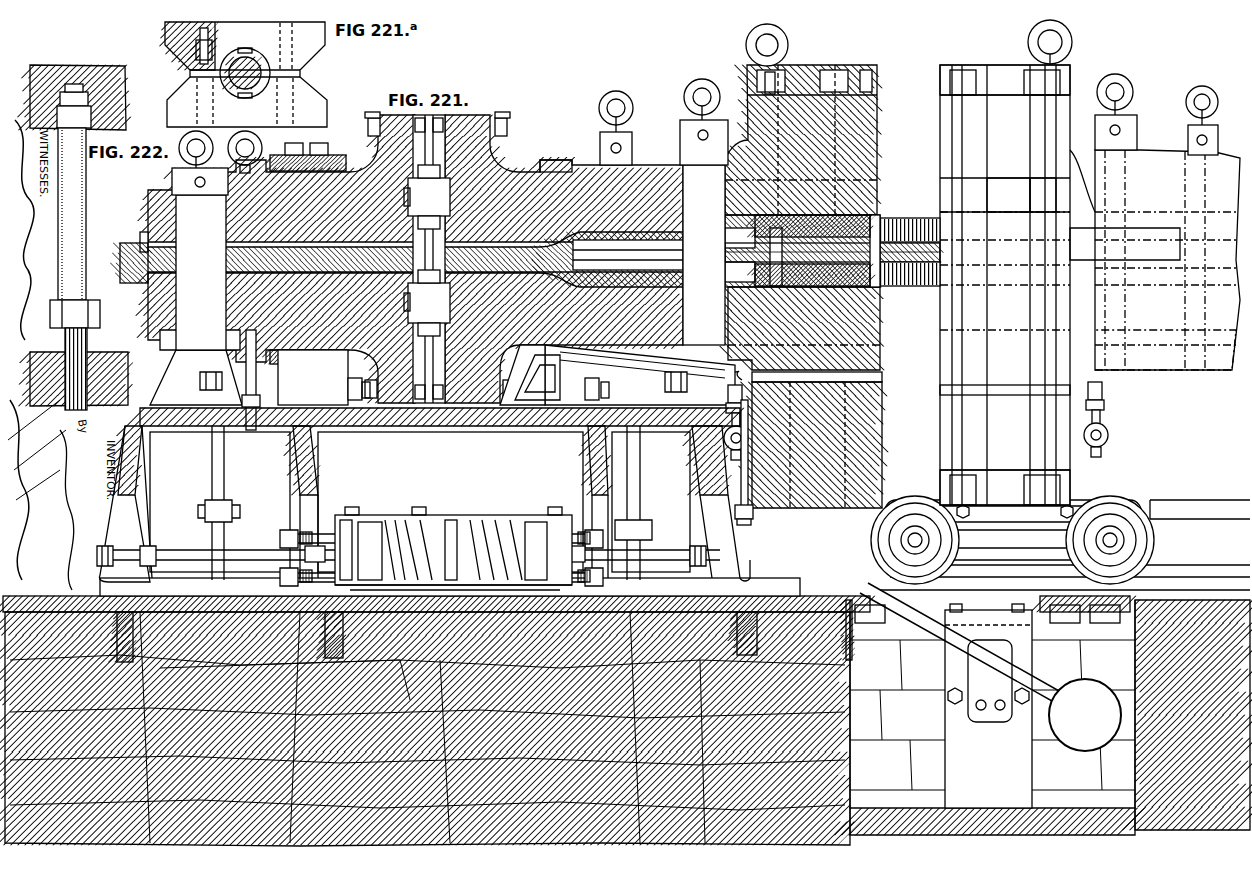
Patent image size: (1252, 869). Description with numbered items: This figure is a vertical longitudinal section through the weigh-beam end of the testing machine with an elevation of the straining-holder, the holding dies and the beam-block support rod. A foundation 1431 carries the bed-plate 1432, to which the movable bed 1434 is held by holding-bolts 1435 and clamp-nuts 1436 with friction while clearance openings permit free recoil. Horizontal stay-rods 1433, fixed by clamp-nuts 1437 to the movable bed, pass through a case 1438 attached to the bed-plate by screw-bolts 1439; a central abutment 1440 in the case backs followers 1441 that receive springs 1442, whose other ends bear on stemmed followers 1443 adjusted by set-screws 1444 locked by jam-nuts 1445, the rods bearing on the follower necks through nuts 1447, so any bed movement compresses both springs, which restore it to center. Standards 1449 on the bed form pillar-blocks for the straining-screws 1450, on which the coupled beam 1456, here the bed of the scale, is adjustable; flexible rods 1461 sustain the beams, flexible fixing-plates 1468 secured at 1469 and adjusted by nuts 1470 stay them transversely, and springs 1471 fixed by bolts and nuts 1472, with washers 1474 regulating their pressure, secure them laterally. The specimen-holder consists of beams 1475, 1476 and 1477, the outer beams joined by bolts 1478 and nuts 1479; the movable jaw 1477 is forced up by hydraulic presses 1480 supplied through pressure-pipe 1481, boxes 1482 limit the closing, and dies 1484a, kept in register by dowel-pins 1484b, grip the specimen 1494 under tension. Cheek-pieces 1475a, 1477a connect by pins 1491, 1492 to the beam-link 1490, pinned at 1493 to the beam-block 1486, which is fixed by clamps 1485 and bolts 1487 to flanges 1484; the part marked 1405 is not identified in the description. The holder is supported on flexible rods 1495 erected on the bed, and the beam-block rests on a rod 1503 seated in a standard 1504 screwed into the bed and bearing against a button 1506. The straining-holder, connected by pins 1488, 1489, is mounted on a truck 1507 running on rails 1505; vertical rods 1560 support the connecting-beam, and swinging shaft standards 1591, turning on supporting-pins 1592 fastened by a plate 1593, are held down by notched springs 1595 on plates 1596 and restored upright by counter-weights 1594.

In FIG. 221, the cap plate 1405 is at (308, 163).
In FIG. 221, the foundation 1431 is at (626, 723).
In FIG. 221, the bed-plate 1432 is at (565, 620).
In FIG. 221, the horizontal stay-rods 1433 is at (414, 552).
In FIG. 222, the movable bed 1434 is at (86, 371).
In FIG. 221, the movable bed 1434 is at (399, 456).
In FIG. 221, the holding-bolts 1435 is at (431, 495).
In FIG. 221, the clamp-nuts 1436 is at (458, 385).
In FIG. 221, the clamp-nuts 1437 is at (408, 550).
In FIG. 221, the case or bearing 1438 is at (453, 550).
In FIG. 221, the screw-bolts 1439 is at (453, 514).
In FIG. 221, the central abutment 1440 is at (453, 579).
In FIG. 221, the followers 1441 is at (414, 550).
In FIG. 221, the springs 1442 is at (450, 550).
In FIG. 221, the followers 1443 is at (455, 551).
In FIG. 221, the set-screws 1444 is at (434, 558).
In FIG. 221, the jam-nuts 1445 is at (448, 544).
In FIG. 221, the nuts 1447 is at (450, 554).
In FIG. 221, the standards or pillar-blocks 1449 is at (442, 321).
In FIG. 221, the straining-screws 1450 is at (905, 248).
In FIG. 221, the coupled beam 1456 is at (372, 197).
In FIG. 221, the flexible rods 1461 is at (427, 375).
In FIG. 221, the flexible fixing-plates 1468 is at (476, 384).
In FIG. 221, the fixing-plate attachment 1469 is at (485, 383).
In FIG. 221, the nuts 1470 is at (799, 212).
In FIG. 221, the fixing plates or springs 1471 is at (444, 258).
In FIG. 221, the bolts and nuts 1472 is at (433, 255).
In FIG. 221, the washers 1474 is at (436, 259).
In FIG. 221, the outer beam of specimen-holder 1475 is at (1006, 262).
In FIG. 221, the cheek-piece 1475a is at (1155, 260).
In FIG. 221, the outer beam of specimen-holder 1476 is at (671, 311).
In FIG. 221, the interposed movable beam 1477 is at (695, 307).
In FIG. 221, the cheek-piece 1477a is at (1165, 333).
In FIG. 221, the connecting-bolts 1478 is at (1044, 195).
In FIG. 221, the nuts 1479 is at (1012, 324).
In FIG. 221, the hydraulic presses 1480 is at (911, 384).
In FIG. 221, the pressure-pipe 1481 is at (921, 415).
In FIG. 221, the boxes 1482 is at (1008, 195).
In FIG. 221, the flanges 1484 is at (557, 160).
In FIG. 221A, the dies 1484a is at (272, 99).
In FIG. 221, the dies 1484a is at (811, 250).
In FIG. 221A, the dowel-pins 1484b is at (192, 74).
In FIG. 221, the clamps 1485 is at (279, 337).
In FIG. 222, the beam-block 1486 is at (89, 97).
In FIG. 221, the beam-block 1486 is at (318, 183).
In FIG. 221, the bolts 1487 is at (322, 148).
In FIG. 221, the pin 1488 is at (1122, 112).
In FIG. 221, the pin 1489 is at (1216, 120).
In FIG. 221, the beam-link 1490 is at (503, 251).
In FIG. 221, the pin 1491 is at (630, 128).
In FIG. 221, the pin 1492 is at (704, 212).
In FIG. 221, the pin 1493 is at (217, 240).
In FIG. 221, the specimen 1494 is at (837, 252).
In FIG. 221, the supporting rods 1495 is at (757, 462).
In FIG. 222, the rod 1503 is at (67, 214).
In FIG. 221, the rod 1503 is at (246, 380).
In FIG. 222, the standard 1504 is at (89, 355).
In FIG. 221, the rails or ways 1505 is at (1065, 577).
In FIG. 222, the button or bearing-piece 1506 is at (74, 106).
In FIG. 221, the truck 1507 is at (1013, 530).
In FIG. 221, the vertical rods 1560 is at (1200, 509).
In FIG. 221, the swinging standards 1591 is at (988, 706).
In FIG. 221, the supporting-pins 1592 is at (986, 660).
In FIG. 221, the plate 1593 is at (988, 681).
In FIG. 221, the counter-weights 1594 is at (990, 667).
In FIG. 221, the notched springs 1595 is at (992, 704).
In FIG. 221, the plates 1596 is at (847, 630).